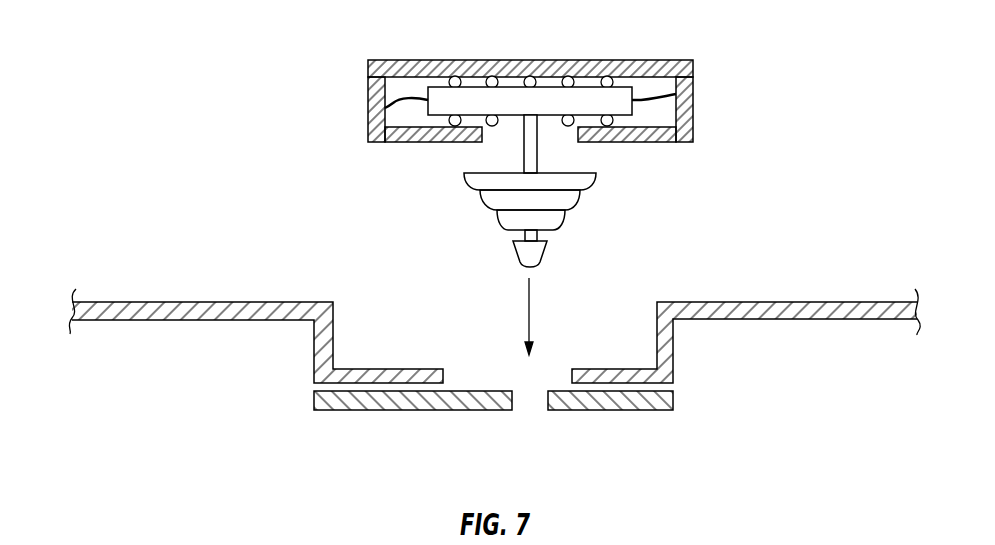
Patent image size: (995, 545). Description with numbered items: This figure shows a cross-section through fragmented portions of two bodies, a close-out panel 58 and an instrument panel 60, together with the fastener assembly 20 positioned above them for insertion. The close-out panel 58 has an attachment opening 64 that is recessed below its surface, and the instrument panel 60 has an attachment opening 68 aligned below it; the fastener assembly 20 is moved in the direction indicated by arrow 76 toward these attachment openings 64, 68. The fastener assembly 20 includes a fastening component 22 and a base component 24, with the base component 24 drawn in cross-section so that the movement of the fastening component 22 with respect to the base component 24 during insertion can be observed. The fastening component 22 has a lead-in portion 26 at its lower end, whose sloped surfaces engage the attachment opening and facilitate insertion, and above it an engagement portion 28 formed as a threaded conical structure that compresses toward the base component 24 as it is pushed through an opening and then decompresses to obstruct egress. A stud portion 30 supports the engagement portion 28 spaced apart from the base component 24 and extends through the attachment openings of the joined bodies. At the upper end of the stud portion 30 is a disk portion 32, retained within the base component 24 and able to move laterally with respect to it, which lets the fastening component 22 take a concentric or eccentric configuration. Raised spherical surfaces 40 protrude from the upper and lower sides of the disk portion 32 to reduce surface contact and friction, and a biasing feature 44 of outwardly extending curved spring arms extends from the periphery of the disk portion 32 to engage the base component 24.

The fastener assembly 20 is at (455, 149).
The base component 24 is at (357, 142).
The disk portion 32 is at (583, 97).
The raised spherical surfaces 40 is at (492, 80).
The biasing feature 44 is at (407, 97).
The stud portion 30 is at (523, 141).
The fastening component 22 is at (535, 207).
The engagement portion 28 is at (607, 172).
The lead-in portion 26 is at (545, 249).
The arrow 76 is at (532, 303).
The close-out panel 58 is at (494, 322).
The attachment opening 64 is at (463, 368).
The instrument panel 60 is at (454, 432).
The attachment opening 68 is at (538, 406).